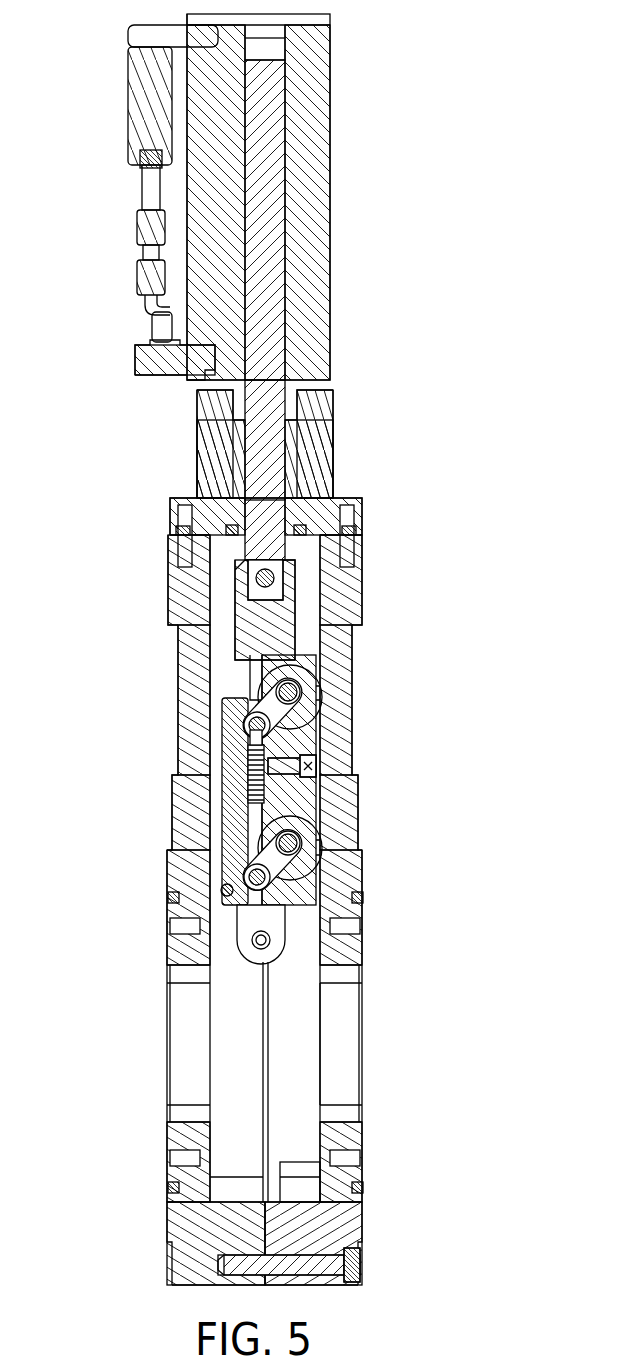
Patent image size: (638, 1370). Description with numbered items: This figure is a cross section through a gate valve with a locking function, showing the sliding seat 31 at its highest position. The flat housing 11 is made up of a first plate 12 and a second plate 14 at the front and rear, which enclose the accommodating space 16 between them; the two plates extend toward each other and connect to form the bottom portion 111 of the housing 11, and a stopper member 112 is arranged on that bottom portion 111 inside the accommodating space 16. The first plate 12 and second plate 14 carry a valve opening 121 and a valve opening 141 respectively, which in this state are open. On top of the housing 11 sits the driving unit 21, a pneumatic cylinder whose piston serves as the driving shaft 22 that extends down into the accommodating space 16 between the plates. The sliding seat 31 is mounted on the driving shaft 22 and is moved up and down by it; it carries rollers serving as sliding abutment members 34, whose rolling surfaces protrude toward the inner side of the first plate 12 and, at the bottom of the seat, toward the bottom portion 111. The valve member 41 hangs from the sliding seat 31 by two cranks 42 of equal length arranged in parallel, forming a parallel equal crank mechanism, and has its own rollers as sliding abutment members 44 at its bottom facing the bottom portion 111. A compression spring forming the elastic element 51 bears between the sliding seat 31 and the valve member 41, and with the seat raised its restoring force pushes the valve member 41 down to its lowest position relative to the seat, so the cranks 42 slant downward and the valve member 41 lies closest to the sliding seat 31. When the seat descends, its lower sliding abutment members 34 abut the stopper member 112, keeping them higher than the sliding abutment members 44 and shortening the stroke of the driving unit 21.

The housing 11 is at (372, 605).
The first plate 12 is at (360, 810).
The second plate 14 is at (182, 813).
The accommodating space 16 is at (228, 1000).
The driving unit 21 is at (334, 188).
The driving shaft 22 is at (287, 549).
The sliding seat 31 is at (333, 739).
The sliding abutment members 34 is at (301, 697).
The valve member 41 is at (208, 821).
The cranks 42 is at (250, 715).
The sliding abutment members 44 is at (245, 958).
The elastic element 51 is at (256, 768).
The bottom portion 111 is at (193, 1287).
The stopper member 112 is at (300, 1162).
The valve opening 121 is at (350, 1008).
The valve opening 141 is at (187, 1048).